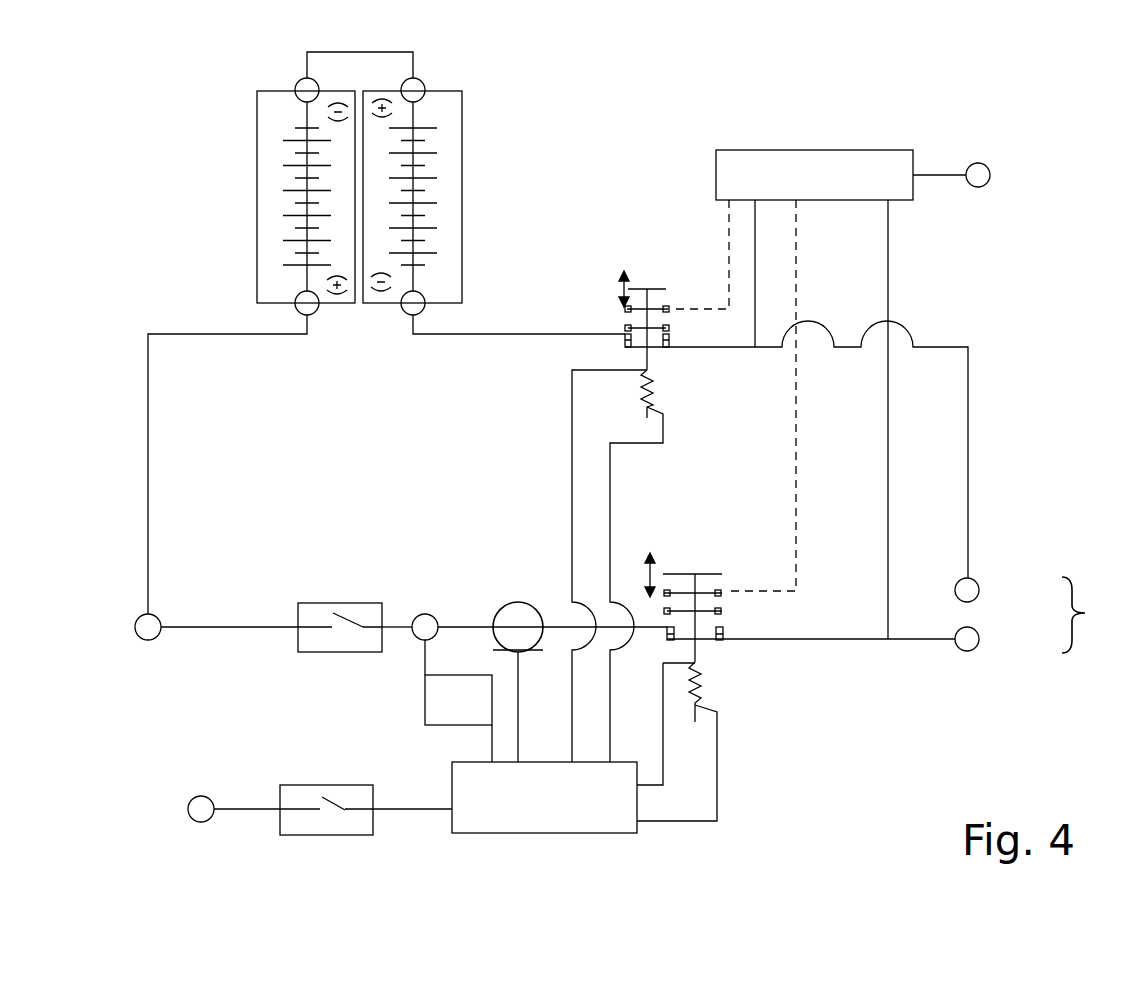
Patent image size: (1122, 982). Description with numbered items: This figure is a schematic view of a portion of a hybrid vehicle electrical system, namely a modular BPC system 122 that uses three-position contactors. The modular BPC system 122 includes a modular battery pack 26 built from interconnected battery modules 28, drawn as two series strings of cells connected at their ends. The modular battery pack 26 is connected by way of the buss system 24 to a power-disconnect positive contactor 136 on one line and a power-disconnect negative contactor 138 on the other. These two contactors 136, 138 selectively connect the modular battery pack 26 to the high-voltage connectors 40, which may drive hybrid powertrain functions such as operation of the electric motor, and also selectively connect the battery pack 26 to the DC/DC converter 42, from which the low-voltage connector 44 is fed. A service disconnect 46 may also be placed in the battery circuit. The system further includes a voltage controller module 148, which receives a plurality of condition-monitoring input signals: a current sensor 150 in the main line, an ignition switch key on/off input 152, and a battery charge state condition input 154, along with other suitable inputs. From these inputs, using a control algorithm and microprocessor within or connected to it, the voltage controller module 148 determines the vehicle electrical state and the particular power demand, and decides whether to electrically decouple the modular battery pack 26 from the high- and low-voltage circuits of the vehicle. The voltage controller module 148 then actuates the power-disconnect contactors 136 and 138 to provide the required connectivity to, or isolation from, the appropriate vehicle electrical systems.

The modular BPC system 122 is at (150, 268).
The modular battery pack 26 is at (498, 140).
The battery modules 28 is at (257, 157).
The buss system 24 is at (148, 393).
The DC/DC converter 42 is at (850, 150).
The low-voltage connector 44 is at (990, 173).
The high-voltage connectors 40 is at (1012, 546).
The power-disconnect negative contactor (PDNC) 138 is at (683, 390).
The power-disconnect positive contactor (PDPC) 136 is at (765, 752).
The service disconnect 46 is at (335, 603).
The current sensor 150 is at (520, 602).
The battery charge state condition input 154 is at (425, 702).
The ignition switch key on/off input 152 is at (280, 783).
The voltage controller module (VCM) 148 is at (608, 833).